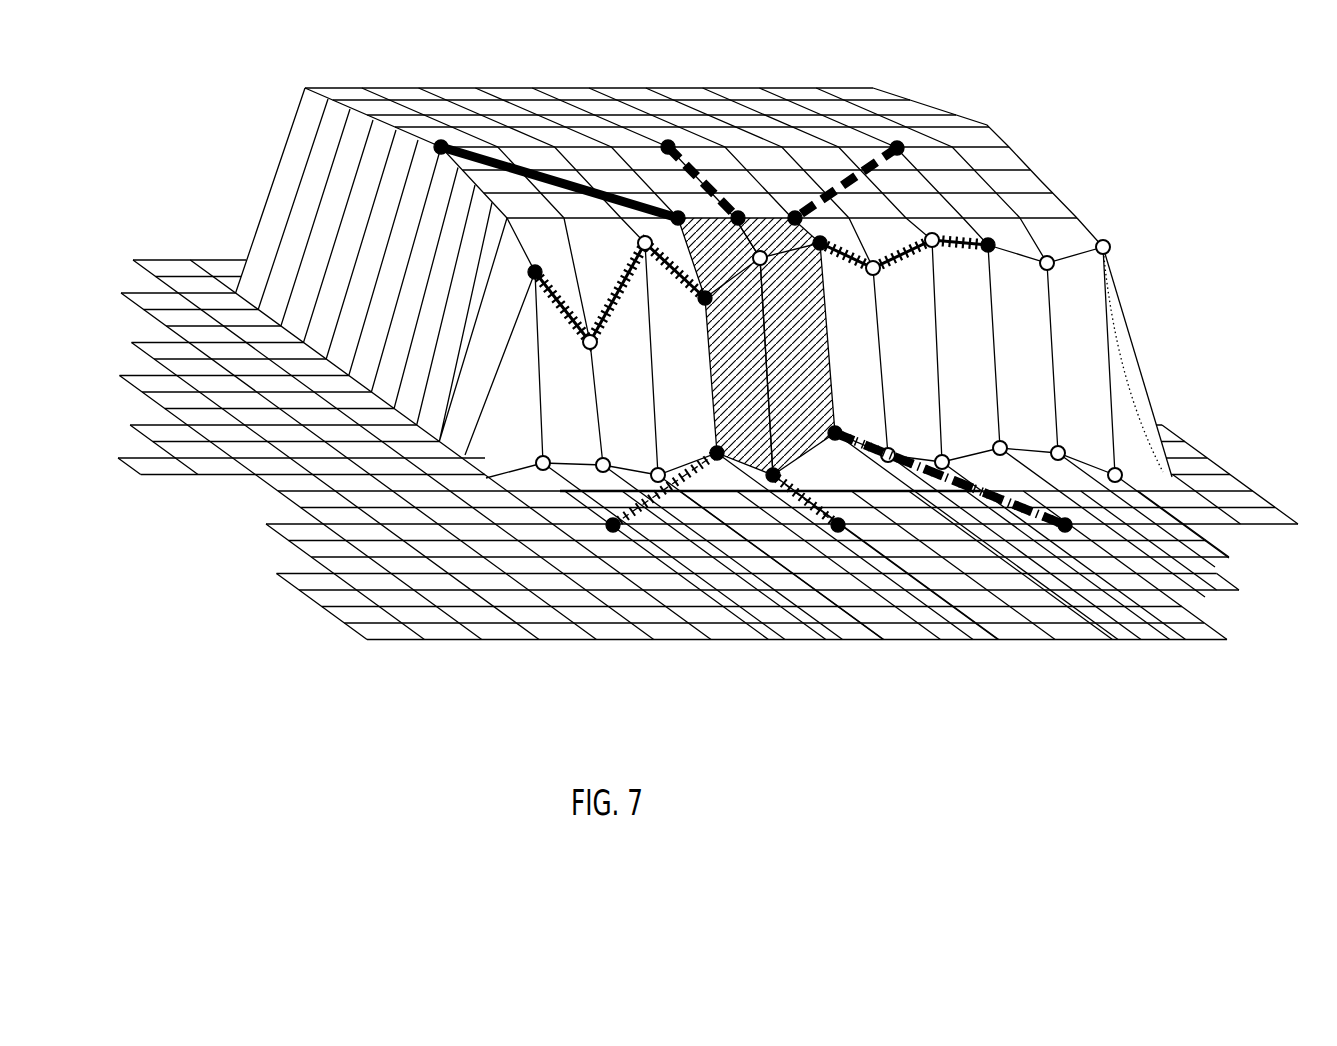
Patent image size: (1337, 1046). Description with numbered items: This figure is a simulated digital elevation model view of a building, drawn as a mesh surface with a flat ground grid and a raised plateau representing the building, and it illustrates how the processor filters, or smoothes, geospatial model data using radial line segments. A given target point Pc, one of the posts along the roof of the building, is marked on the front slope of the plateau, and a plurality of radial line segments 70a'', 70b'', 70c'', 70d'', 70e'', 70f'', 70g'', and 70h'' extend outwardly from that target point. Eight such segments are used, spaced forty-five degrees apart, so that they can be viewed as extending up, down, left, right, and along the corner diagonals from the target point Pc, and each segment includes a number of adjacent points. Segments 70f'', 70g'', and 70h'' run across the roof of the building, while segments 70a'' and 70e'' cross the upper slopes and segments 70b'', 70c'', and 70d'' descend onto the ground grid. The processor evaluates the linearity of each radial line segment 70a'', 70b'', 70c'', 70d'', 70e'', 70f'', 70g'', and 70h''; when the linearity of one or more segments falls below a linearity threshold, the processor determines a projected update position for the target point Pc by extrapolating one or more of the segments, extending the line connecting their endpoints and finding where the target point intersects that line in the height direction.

The radial line segment 70a'' is at (943, 189).
The radial line segment 70b'' is at (1076, 458).
The radial line segment 70c'' is at (736, 579).
The radial line segment 70d'' is at (587, 583).
The radial line segment 70e'' is at (424, 381).
The radial line segment 70f'' is at (559, 126).
The radial line segment 70g'' is at (725, 132).
The radial line segment 70h'' is at (873, 129).
The target point Pc is at (787, 273).